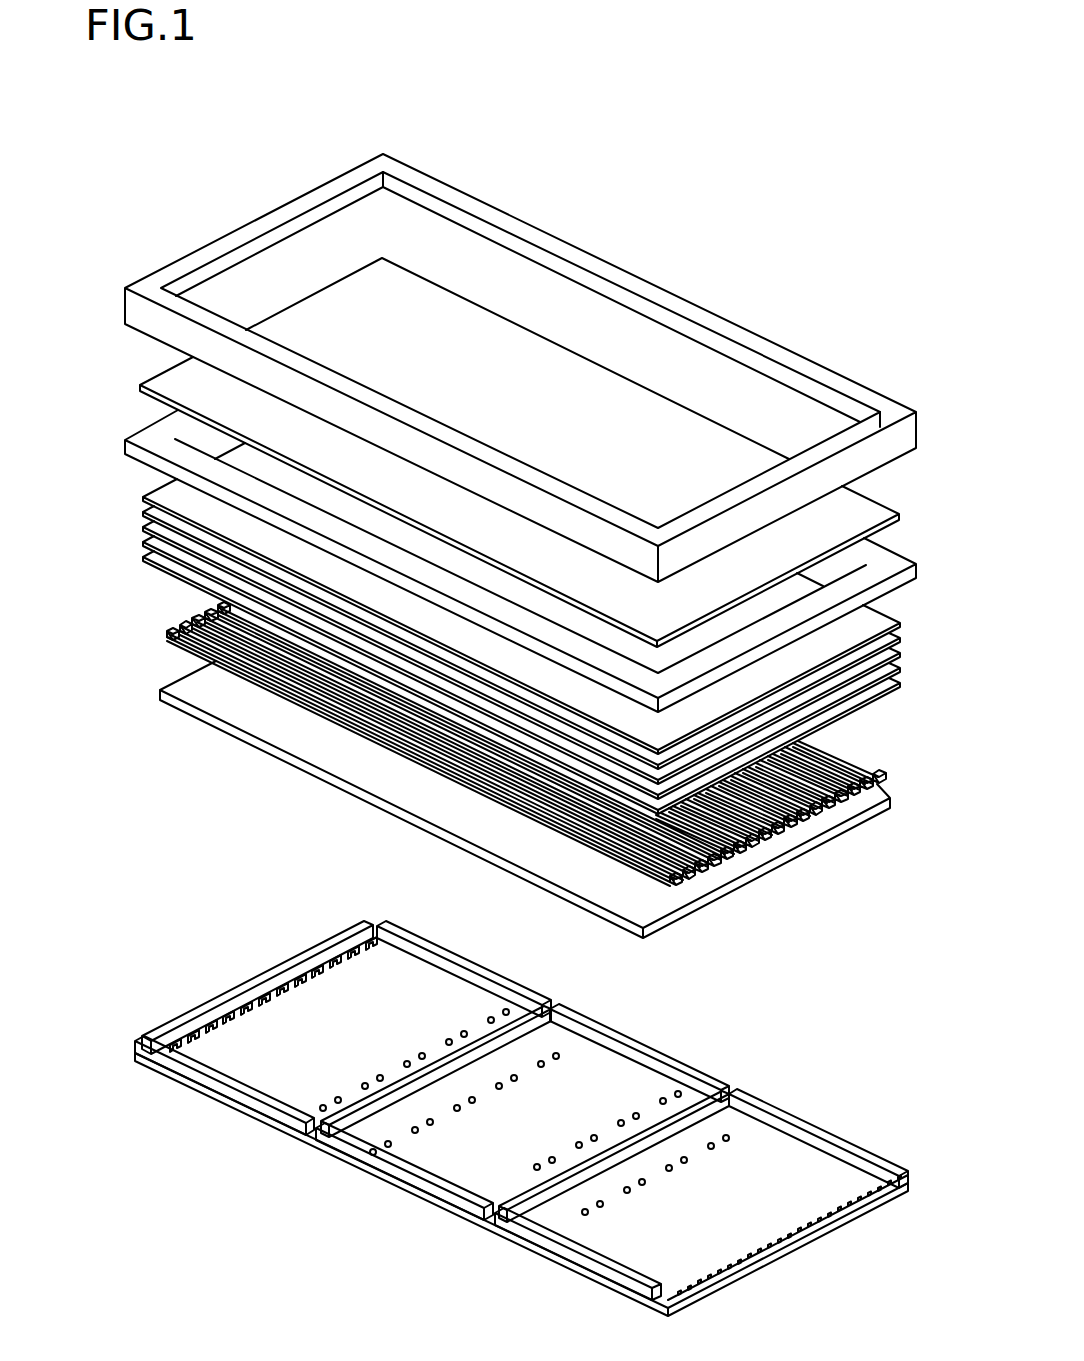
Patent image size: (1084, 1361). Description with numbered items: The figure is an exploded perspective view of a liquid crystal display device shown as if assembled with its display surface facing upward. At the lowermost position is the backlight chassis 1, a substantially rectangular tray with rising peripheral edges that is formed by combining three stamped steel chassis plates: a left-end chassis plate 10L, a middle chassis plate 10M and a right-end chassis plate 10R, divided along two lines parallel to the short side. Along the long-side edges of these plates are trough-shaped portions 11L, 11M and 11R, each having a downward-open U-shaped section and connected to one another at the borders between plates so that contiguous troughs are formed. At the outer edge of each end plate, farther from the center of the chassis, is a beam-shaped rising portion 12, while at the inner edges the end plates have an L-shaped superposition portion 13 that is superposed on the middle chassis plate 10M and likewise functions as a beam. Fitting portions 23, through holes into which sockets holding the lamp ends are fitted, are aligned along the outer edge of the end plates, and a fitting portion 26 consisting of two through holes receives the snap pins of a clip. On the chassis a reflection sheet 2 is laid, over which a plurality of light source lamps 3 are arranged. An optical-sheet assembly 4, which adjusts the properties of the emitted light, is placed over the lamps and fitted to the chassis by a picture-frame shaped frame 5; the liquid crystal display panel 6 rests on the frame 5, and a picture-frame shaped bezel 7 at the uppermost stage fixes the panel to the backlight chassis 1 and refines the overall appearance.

The backlight chassis 1 is at (131, 1011).
The reflection sheet 2 is at (160, 691).
The light source lamps 3 is at (200, 647).
The optical-sheet assembly 4 is at (133, 525).
The frame 5 is at (124, 446).
The liquid crystal display panel 6 is at (140, 384).
The bezel 7 is at (123, 297).
The left-end chassis plate 10L is at (309, 1043).
The middle chassis plate 10M is at (495, 1132).
The right-end chassis plate 10R is at (676, 1222).
The trough-shaped portions 11L is at (465, 950).
The trough-shaped portions 11M is at (645, 1044).
The trough-shaped portions 11R is at (818, 1128).
The rising portion 12 is at (246, 985).
The superposition portion 13 is at (393, 1107).
The fitting portion 23 is at (368, 966).
The fitting portion 26 is at (732, 1142).